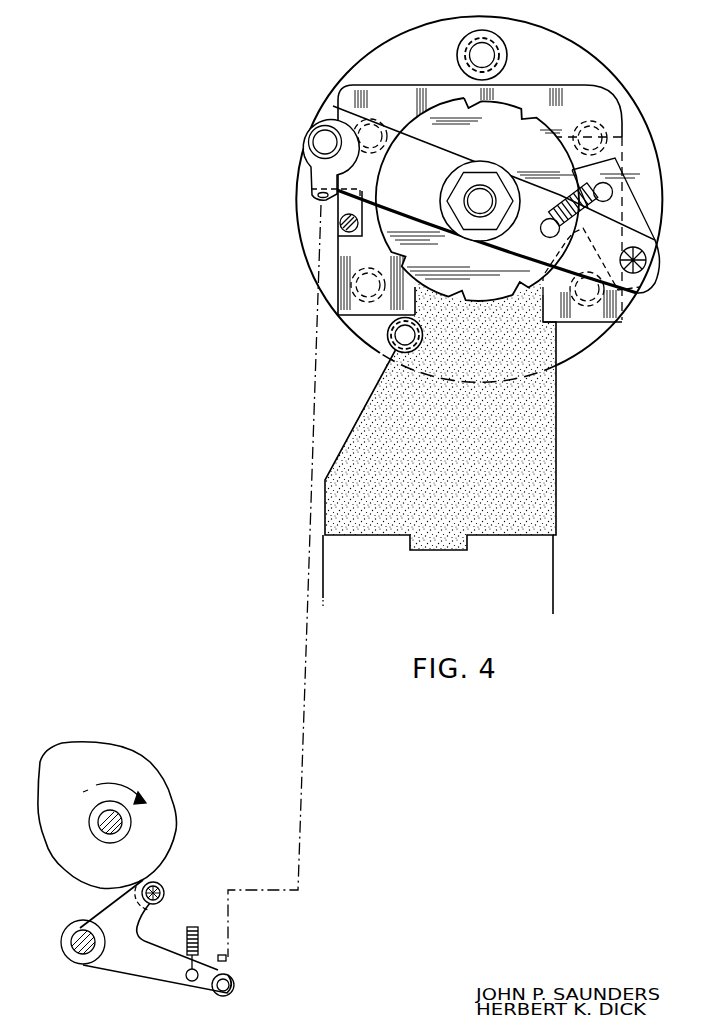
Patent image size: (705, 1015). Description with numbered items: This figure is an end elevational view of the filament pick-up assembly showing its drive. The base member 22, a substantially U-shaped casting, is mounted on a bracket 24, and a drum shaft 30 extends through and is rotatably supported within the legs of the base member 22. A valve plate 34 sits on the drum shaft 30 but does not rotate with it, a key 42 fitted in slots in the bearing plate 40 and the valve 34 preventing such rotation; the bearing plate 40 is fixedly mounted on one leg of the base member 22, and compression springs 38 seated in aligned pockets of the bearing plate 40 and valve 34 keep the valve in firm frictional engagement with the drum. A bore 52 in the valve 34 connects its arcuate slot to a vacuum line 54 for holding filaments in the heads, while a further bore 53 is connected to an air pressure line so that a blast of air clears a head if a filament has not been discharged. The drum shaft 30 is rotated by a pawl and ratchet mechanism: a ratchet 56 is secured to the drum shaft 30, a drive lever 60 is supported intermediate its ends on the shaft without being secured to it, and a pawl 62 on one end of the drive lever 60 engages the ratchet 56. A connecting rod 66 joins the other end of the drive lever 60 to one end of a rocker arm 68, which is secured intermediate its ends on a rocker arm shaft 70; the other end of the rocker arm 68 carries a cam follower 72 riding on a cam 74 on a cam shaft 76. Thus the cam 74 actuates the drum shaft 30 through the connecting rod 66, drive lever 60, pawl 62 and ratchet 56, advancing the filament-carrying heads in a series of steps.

The base member 22 is at (548, 447).
The bracket 24 is at (540, 578).
The drum shaft 30 is at (468, 196).
The valve plate 34 is at (616, 96).
The compression springs 38 is at (392, 125).
The bearing plate 40 is at (542, 97).
The key 42 is at (338, 214).
The bore 52 is at (488, 46).
The bore 53 is at (391, 340).
The vacuum line 54 is at (498, 60).
The ratchet 56 is at (515, 121).
The drive lever 60 is at (641, 292).
The pawl 62 is at (642, 207).
The connecting rod 66 is at (309, 167).
The rocker arm 68 is at (165, 978).
The rocker arm shaft 70 is at (86, 936).
The cam follower 72 is at (166, 892).
The cam 74 is at (143, 779).
The cam shaft 76 is at (122, 826).